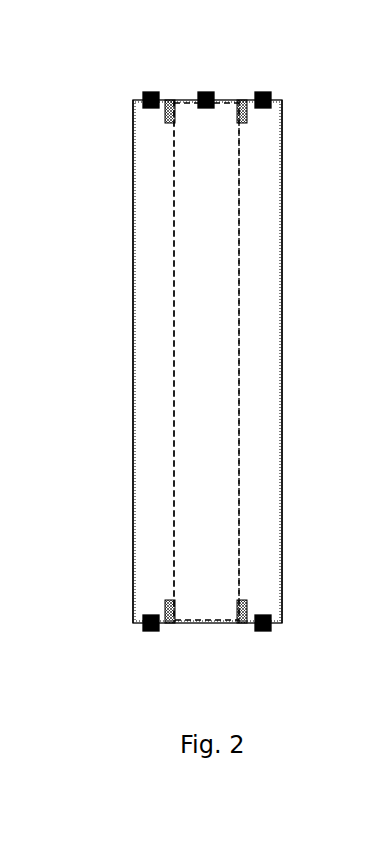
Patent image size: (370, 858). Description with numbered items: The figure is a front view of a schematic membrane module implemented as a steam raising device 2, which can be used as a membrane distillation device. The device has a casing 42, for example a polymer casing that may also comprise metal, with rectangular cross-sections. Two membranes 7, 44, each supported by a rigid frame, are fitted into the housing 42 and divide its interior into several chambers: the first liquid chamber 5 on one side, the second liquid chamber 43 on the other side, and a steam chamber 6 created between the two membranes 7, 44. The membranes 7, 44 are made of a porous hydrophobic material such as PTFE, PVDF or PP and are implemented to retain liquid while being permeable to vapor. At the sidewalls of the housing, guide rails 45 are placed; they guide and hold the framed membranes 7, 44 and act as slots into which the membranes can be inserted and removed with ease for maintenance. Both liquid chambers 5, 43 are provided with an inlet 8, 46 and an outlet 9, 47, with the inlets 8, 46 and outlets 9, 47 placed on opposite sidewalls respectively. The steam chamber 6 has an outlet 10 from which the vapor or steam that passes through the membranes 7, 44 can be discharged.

The steam raising device 2 is at (64, 121).
The first liquid chamber 5 is at (140, 282).
The steam chamber 6 is at (218, 497).
The membrane 7 is at (174, 553).
The inlet 8 is at (147, 632).
The outlet 9 is at (143, 96).
The outlet 10 is at (207, 92).
The casing 42 is at (132, 403).
The second liquid chamber 43 is at (272, 192).
The membrane 44 is at (240, 578).
The guide rails 45 is at (173, 101).
The inlet 46 is at (263, 632).
The outlet 47 is at (275, 95).